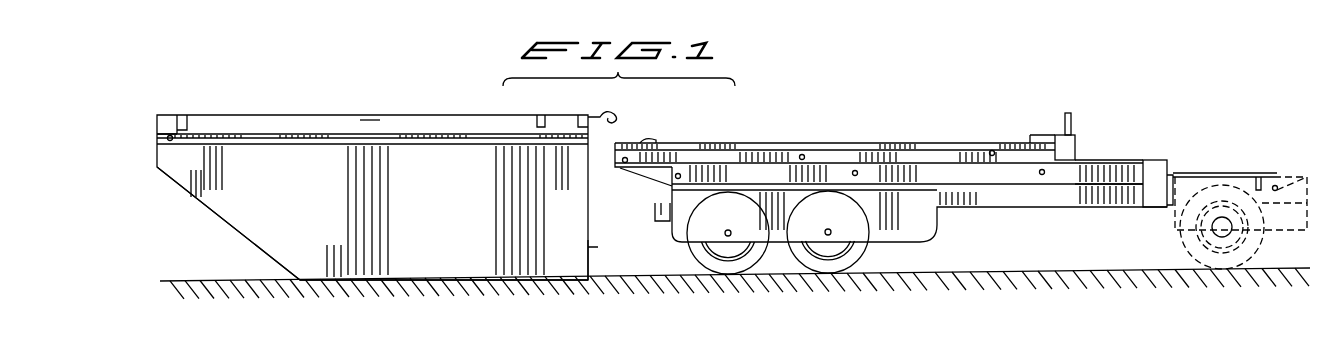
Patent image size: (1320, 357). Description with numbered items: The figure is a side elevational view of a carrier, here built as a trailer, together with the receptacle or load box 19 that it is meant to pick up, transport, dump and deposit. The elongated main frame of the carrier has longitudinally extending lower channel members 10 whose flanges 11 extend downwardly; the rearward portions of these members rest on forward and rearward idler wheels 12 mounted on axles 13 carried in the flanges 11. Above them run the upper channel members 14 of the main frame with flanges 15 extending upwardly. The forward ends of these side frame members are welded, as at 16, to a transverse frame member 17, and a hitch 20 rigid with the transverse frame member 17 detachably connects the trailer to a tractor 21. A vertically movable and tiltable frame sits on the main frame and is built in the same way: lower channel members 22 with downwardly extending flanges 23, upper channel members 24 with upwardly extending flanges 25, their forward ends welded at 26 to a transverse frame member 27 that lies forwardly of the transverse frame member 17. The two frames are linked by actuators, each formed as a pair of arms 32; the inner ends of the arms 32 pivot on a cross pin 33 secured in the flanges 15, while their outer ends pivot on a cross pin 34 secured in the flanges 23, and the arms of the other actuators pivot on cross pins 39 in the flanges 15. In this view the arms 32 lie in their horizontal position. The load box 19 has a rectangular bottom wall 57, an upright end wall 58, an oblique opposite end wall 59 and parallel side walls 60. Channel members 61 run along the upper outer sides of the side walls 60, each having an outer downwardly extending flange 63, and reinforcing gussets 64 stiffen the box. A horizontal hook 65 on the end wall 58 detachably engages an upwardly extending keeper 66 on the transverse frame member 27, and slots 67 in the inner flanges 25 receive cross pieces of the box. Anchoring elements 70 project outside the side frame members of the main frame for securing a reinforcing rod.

The lower channel member 10 is at (1013, 200).
The flange 11 is at (958, 200).
The idler wheel 12 is at (750, 263).
The axle 13 is at (745, 218).
The upper channel member 14 is at (1055, 188).
The flange 15 is at (1100, 166).
The weld 16 is at (1148, 160).
The transverse frame member 17 is at (1167, 207).
The load box 19 is at (458, 205).
The hitch 20 is at (1212, 173).
The tractor 21 is at (1285, 185).
The lower channel member 22 is at (948, 160).
The flange 23 is at (910, 160).
The upper channel member 24 is at (752, 150).
The flange 25 is at (786, 150).
The weld 26 is at (1054, 136).
The transverse frame member 27 is at (1075, 150).
The arm 32 is at (663, 182).
The cross pin 33 is at (680, 173).
The cross pin 34 is at (625, 163).
The cross pin 39 is at (857, 171).
The bottom wall 57 is at (450, 280).
The end wall 58 is at (598, 247).
The end wall 59 is at (266, 252).
The side wall 60 is at (360, 282).
The channel member 61 is at (322, 138).
The outer flange 63 is at (424, 140).
The reinforcing gusset 64 is at (365, 119).
The hook 65 is at (611, 113).
The keeper 66 is at (1070, 125).
The slot 67 is at (650, 142).
The anchoring element 70 is at (661, 223).